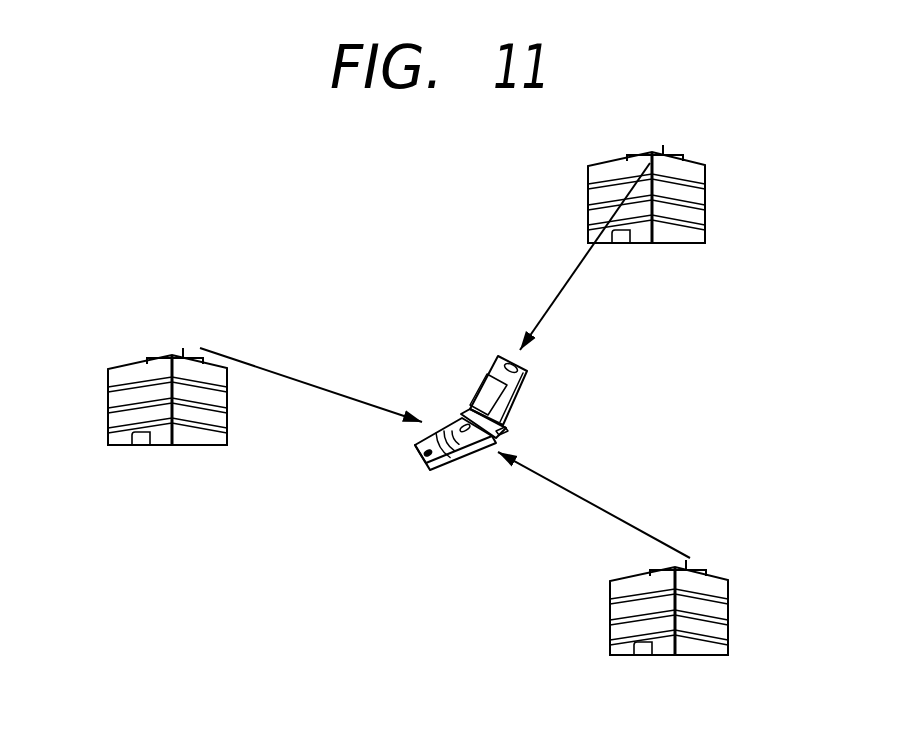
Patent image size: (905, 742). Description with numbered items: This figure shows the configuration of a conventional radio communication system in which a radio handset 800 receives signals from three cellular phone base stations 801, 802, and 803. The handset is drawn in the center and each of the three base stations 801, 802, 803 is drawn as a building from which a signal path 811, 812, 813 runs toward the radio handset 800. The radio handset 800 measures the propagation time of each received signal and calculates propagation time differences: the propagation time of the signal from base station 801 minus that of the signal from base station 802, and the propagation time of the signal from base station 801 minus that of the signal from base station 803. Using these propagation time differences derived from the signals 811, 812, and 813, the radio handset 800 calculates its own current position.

The radio handset 800 is at (525, 388).
The cellular phone base station 801 is at (106, 372).
The cellular phone base station 802 is at (708, 177).
The cellular phone base station 803 is at (730, 586).
The radio signal from base station 801 811 is at (315, 384).
The radio signal from base station 802 812 is at (557, 287).
The radio signal from base station 803 813 is at (622, 517).